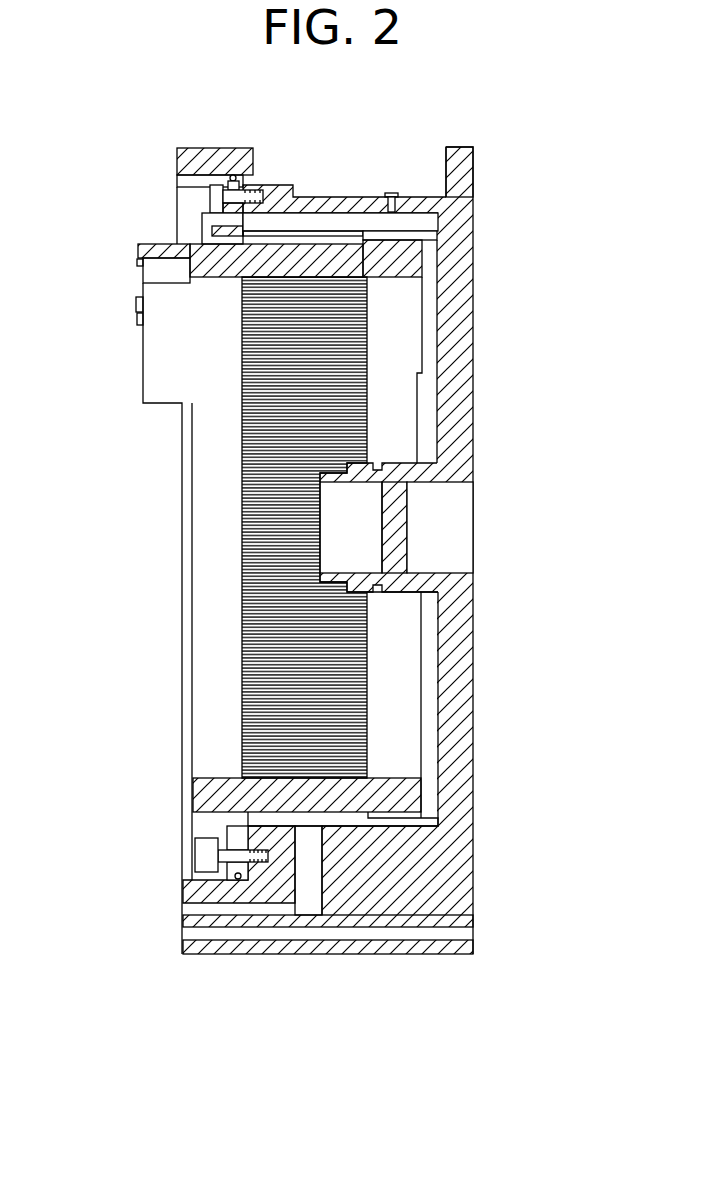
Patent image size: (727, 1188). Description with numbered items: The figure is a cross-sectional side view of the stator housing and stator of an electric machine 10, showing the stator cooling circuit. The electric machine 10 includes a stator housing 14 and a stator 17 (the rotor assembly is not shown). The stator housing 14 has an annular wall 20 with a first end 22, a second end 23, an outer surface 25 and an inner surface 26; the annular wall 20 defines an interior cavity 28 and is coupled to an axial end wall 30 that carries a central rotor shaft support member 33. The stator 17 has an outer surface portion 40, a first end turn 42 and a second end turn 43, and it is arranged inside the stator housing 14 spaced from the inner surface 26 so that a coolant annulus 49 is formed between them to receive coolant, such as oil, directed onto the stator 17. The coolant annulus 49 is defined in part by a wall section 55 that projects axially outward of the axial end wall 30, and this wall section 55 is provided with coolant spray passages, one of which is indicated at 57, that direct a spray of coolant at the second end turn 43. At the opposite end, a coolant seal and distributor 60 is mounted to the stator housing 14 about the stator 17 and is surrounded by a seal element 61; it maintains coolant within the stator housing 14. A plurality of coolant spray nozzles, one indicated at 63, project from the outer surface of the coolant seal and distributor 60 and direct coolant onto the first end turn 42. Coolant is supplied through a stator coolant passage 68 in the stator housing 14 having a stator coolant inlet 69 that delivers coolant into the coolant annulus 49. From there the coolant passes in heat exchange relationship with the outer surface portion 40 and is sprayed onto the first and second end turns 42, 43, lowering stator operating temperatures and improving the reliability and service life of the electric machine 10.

The electric machine 10 is at (522, 1012).
The stator housing 14 is at (488, 678).
The stator 17 is at (203, 708).
The annular wall 20 is at (323, 968).
The first end 22 is at (177, 158).
The second end 23 is at (474, 191).
The outer surface 25 is at (333, 197).
The inner surface 26 is at (438, 812).
The interior cavity 28 is at (434, 745).
The axial end wall 30 is at (482, 462).
The central rotor shaft support member 33 is at (428, 602).
The outer surface portion 40 is at (324, 247).
The first end turn 42 is at (205, 252).
The second end turn 43 is at (385, 272).
The coolant annulus 49 is at (270, 812).
The wall section 55 is at (434, 236).
The coolant spray passage 57 is at (398, 262).
The coolant seal and distributor 60 is at (227, 168).
The seal element 61 is at (233, 175).
The coolant spray nozzle 63 is at (205, 215).
The stator coolant passage 68 is at (334, 875).
The stator coolant inlet 69 is at (183, 912).